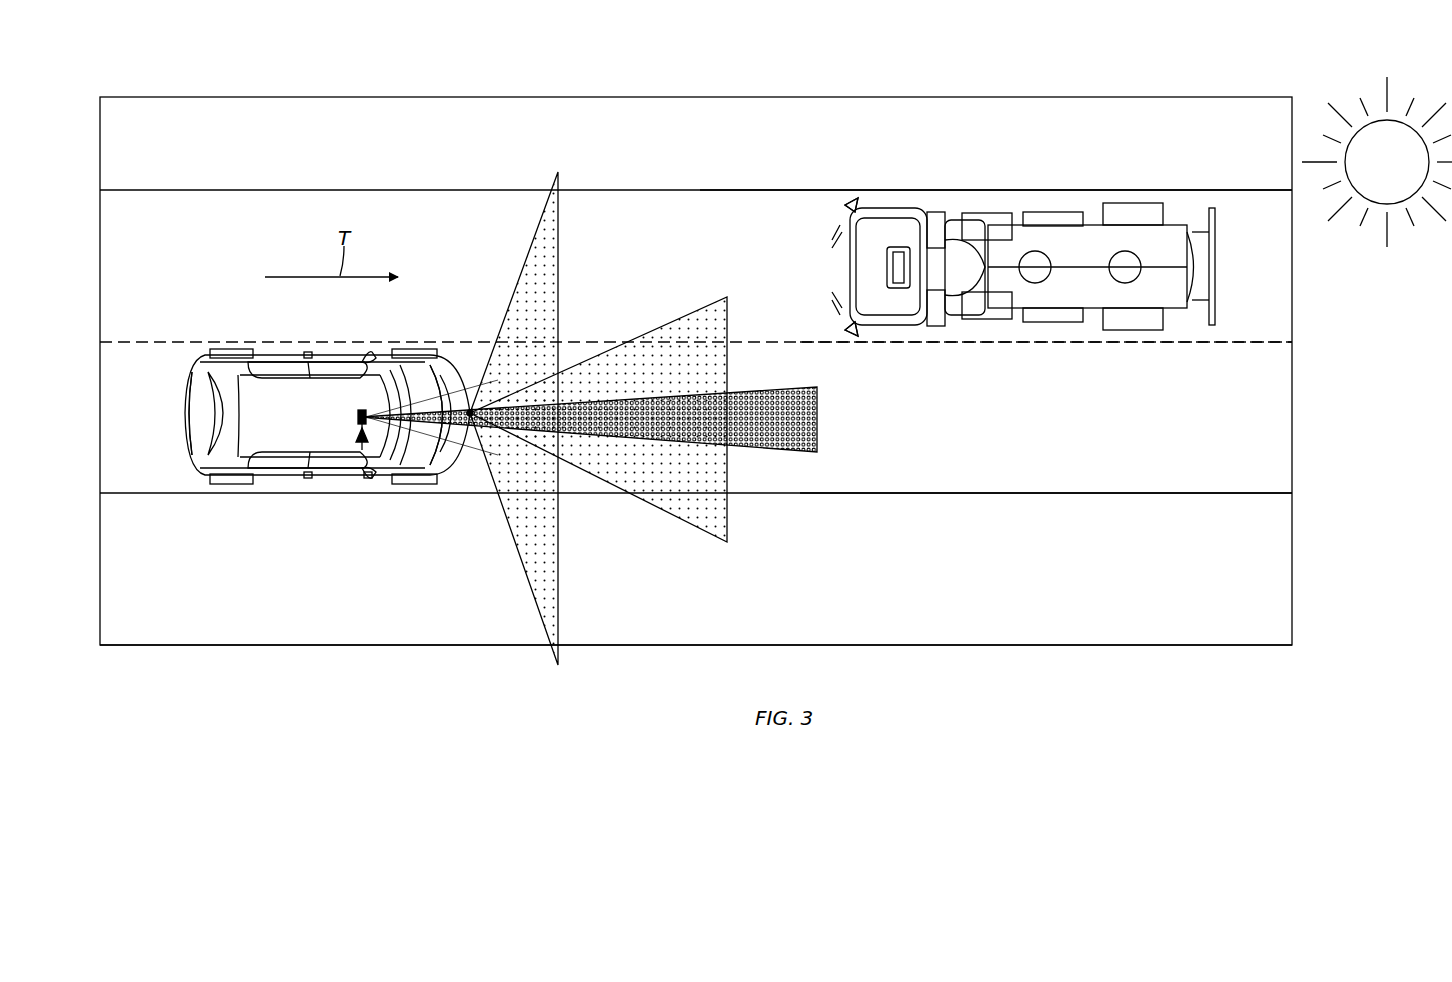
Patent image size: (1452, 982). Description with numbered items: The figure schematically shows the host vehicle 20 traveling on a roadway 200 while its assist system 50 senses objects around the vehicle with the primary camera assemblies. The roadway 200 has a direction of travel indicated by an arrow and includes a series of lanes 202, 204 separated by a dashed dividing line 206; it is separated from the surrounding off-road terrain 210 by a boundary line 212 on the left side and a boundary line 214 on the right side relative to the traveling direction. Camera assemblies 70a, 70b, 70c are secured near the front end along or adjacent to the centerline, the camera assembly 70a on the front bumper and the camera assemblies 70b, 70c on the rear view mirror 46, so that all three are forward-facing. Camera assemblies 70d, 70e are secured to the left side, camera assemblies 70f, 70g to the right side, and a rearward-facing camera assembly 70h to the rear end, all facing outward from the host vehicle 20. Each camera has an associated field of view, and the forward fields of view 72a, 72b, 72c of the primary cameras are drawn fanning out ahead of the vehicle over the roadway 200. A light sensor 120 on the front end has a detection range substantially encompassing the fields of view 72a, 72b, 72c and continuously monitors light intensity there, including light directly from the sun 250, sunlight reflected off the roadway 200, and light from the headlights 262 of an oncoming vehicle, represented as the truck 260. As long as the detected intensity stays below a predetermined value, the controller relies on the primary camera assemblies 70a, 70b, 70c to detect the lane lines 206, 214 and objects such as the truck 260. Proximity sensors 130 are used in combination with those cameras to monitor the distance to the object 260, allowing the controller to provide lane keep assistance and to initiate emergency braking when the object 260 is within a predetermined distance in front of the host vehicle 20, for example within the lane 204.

The host vehicle 20 is at (195, 397).
The rear view mirror 46 is at (356, 417).
The assist system 50 is at (430, 510).
The camera assembly 70a is at (451, 352).
The camera assembly 70b is at (378, 508).
The camera assembly 70c is at (368, 480).
The camera assembly 70d is at (303, 324).
The camera assembly 70e is at (308, 346).
The camera assembly 70f is at (296, 517).
The camera assembly 70g is at (308, 482).
The camera assembly 70h is at (180, 419).
The field of view 72a is at (531, 272).
The field of view 72b is at (698, 318).
The field of view 72c is at (773, 450).
The light sensor 120 is at (451, 352).
The proximity sensor 130 is at (468, 402).
The roadway 200 is at (780, 172).
The lane 202 is at (626, 299).
The lane 204 is at (882, 429).
The dashed dividing line 206 is at (1224, 346).
The off-road terrain 210 is at (872, 172).
The boundary line 212 is at (938, 188).
The boundary line 214 is at (1082, 496).
The sun 250 is at (1406, 172).
The truck 260 is at (1095, 245).
The headlights 262 is at (840, 242).